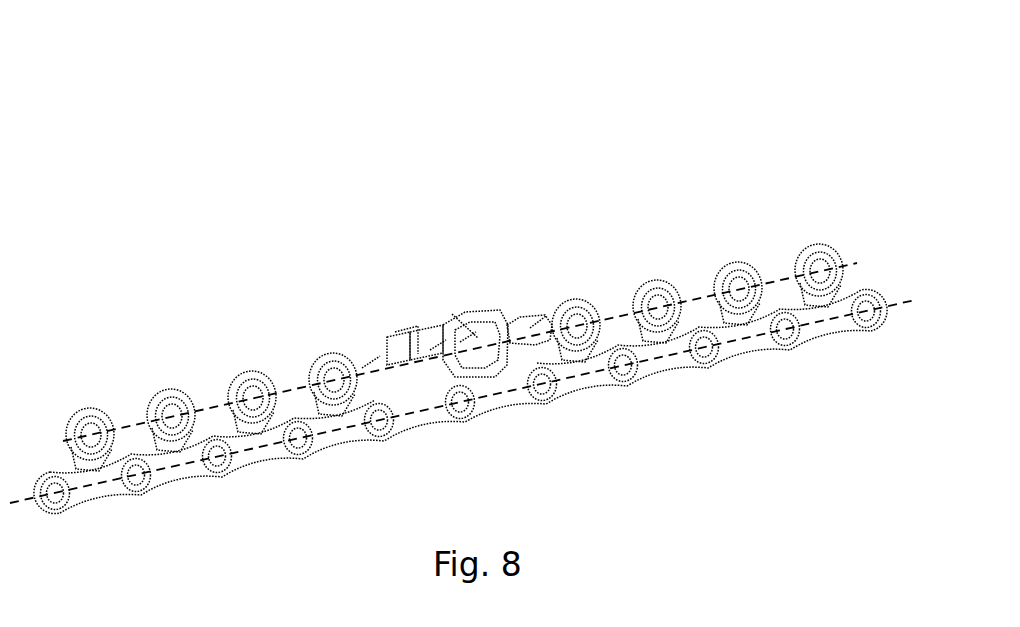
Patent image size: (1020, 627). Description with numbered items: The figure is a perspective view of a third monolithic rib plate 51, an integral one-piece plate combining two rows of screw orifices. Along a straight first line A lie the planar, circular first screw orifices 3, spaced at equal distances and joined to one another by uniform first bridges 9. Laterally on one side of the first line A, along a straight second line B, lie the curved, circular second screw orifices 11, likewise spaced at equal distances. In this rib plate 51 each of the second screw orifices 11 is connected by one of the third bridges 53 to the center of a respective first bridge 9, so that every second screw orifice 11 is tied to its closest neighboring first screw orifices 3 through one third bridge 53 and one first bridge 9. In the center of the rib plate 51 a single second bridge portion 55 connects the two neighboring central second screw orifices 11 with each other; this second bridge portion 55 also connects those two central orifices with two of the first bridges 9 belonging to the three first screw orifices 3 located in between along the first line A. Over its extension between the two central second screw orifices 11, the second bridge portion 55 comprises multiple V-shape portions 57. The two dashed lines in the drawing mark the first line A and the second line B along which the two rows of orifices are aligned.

The third monolithic rib plate 51 is at (177, 92).
The first screw orifice 3 is at (40, 517).
The first bridge 9 is at (180, 475).
The second screw orifice 11 is at (98, 410).
The third bridge 53 is at (177, 445).
The second bridge portion 55 is at (403, 337).
The V-shape portion 57 is at (538, 322).
The first line A is at (735, 340).
The second line B is at (765, 282).